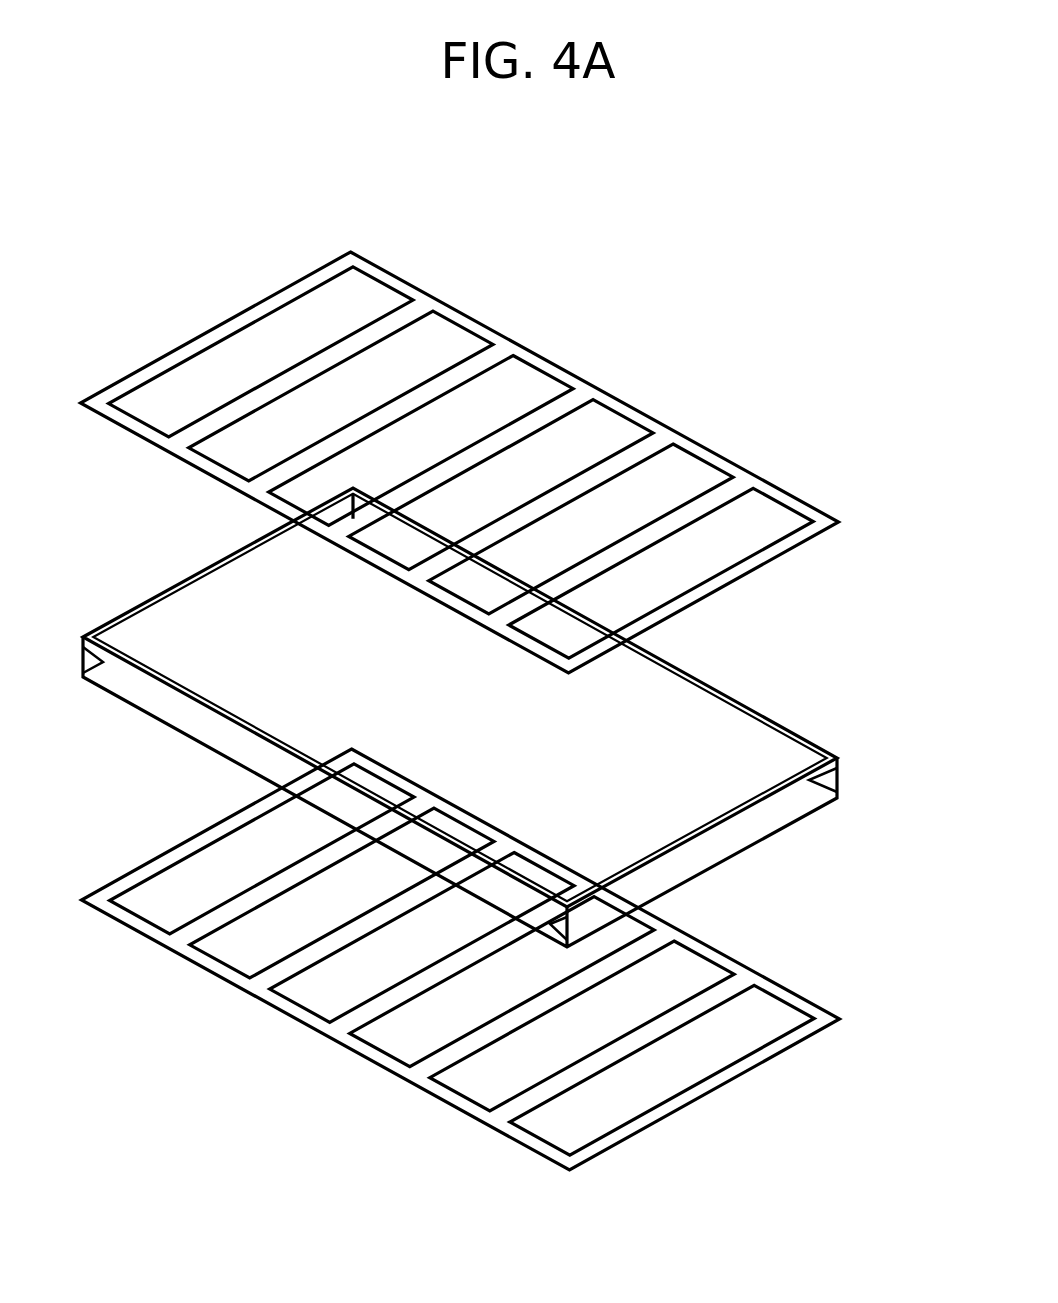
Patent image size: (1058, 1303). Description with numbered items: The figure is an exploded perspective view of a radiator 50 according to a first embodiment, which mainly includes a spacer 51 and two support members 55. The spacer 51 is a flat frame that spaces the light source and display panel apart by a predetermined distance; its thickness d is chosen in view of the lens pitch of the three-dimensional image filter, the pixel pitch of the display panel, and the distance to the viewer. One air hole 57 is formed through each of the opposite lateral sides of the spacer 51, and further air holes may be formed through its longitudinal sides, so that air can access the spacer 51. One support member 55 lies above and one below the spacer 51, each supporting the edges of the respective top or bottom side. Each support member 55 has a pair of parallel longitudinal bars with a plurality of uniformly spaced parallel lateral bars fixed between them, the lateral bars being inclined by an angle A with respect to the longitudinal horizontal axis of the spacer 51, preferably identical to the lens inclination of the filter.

The radiator 50 is at (754, 373).
The spacer 51 is at (484, 717).
The support members 55 is at (617, 463).
The air hole 57 is at (130, 628).
The thickness of the spacer d is at (70, 634).
The inclination of the support member A is at (206, 437).